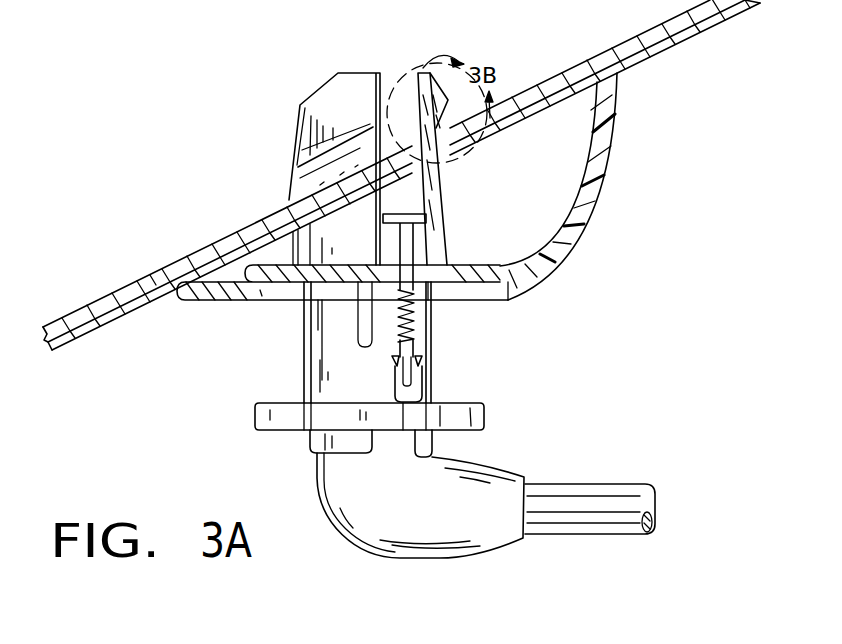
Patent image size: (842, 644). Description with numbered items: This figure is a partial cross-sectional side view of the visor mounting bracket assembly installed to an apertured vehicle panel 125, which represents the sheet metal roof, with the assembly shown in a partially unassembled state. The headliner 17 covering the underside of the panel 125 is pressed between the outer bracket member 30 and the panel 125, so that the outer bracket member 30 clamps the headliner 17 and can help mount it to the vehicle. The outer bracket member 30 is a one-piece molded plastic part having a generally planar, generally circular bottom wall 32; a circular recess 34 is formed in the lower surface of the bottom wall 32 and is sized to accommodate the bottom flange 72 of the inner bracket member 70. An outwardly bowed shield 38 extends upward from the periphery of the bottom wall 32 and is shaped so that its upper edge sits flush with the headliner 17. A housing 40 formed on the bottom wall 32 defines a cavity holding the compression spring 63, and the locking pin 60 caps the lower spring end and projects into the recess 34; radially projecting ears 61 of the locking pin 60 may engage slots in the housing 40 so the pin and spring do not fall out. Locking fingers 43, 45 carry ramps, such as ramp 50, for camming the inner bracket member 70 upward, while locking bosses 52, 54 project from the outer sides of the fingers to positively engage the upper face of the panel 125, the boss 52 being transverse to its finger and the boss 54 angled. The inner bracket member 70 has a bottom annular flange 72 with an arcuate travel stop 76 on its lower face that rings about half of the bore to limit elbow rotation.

The headliner 17 is at (127, 314).
The apertured panel 125 is at (152, 282).
The outer bracket member 30 is at (444, 210).
The bottom wall 32 is at (473, 270).
The circular recess 34 is at (268, 290).
The shield 38 is at (605, 140).
The housing 40 is at (428, 250).
The locking finger 43 is at (446, 141).
The locking finger 45 is at (320, 128).
The ramp 50 is at (307, 144).
The locking boss 52 is at (437, 92).
The locking boss 54 is at (298, 167).
The locking pin 60 is at (378, 342).
The radially projecting ears 61 is at (392, 360).
The compression spring 63 is at (417, 318).
The inner bracket member 70 is at (427, 478).
The bottom annular flange 72 is at (258, 417).
The arcuate travel stop 76 is at (312, 442).